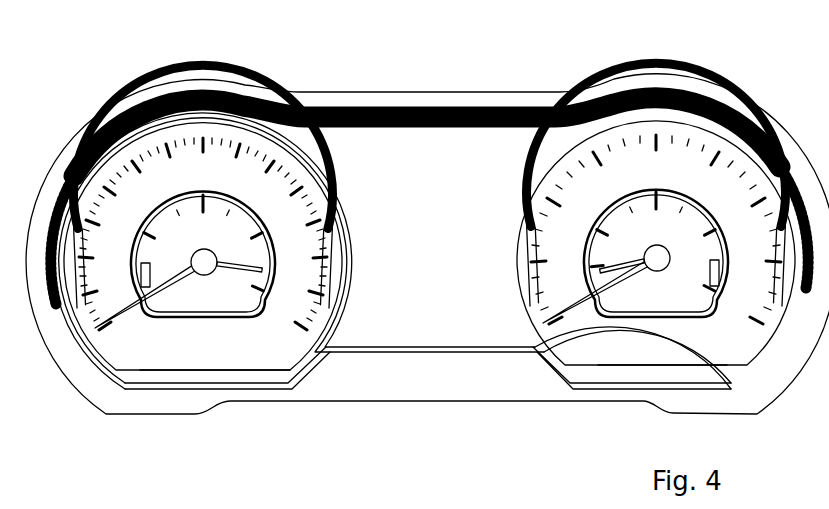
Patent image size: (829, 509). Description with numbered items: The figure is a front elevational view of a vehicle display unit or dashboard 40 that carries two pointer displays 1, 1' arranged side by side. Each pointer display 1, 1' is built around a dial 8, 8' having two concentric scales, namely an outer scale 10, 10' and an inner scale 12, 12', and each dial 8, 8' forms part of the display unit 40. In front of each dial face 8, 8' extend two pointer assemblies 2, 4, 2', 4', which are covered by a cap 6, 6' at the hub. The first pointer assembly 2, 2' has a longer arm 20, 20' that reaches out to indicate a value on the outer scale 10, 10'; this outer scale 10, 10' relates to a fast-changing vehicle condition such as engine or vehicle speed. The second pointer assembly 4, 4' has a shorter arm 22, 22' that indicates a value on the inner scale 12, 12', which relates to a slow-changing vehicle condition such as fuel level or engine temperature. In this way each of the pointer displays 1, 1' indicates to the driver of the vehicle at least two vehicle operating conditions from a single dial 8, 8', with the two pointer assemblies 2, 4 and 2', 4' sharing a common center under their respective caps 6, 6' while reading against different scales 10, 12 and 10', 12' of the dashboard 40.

The pointer display 1 is at (203, 308).
The first pointer assembly 2 is at (415, 184).
The second pointer assembly 4 is at (299, 220).
The cap 6 is at (212, 352).
The dial face 8 is at (218, 396).
The outer scale 10 is at (203, 159).
The inner scale 12 is at (207, 184).
The longer arm 20 is at (114, 356).
The shorter arm 22 is at (239, 367).
The vehicle display unit 40 is at (454, 147).
The pointer display 1' is at (656, 297).
The first pointer assembly 2' is at (698, 159).
The second pointer assembly 4' is at (656, 208).
The cap 6' is at (650, 346).
The dial face 8' is at (675, 392).
The outer scale 10' is at (656, 161).
The inner scale 12' is at (656, 163).
The longer arm 20' is at (573, 354).
The shorter arm 22' is at (548, 354).